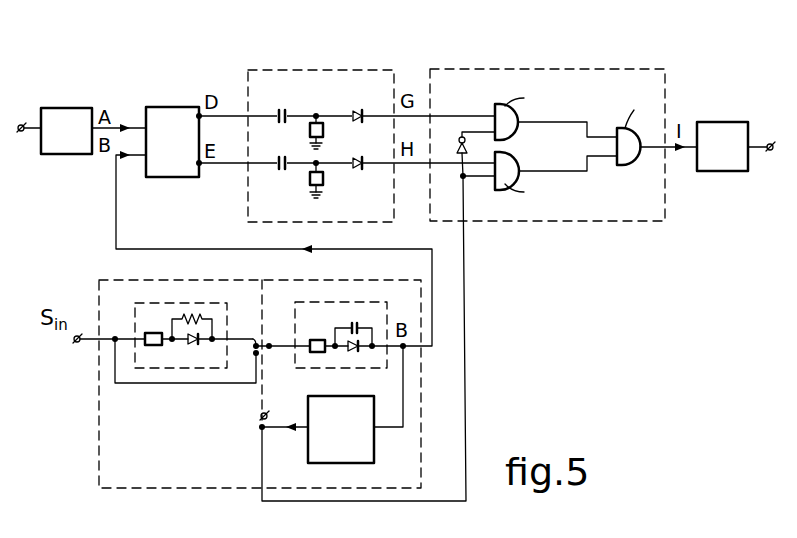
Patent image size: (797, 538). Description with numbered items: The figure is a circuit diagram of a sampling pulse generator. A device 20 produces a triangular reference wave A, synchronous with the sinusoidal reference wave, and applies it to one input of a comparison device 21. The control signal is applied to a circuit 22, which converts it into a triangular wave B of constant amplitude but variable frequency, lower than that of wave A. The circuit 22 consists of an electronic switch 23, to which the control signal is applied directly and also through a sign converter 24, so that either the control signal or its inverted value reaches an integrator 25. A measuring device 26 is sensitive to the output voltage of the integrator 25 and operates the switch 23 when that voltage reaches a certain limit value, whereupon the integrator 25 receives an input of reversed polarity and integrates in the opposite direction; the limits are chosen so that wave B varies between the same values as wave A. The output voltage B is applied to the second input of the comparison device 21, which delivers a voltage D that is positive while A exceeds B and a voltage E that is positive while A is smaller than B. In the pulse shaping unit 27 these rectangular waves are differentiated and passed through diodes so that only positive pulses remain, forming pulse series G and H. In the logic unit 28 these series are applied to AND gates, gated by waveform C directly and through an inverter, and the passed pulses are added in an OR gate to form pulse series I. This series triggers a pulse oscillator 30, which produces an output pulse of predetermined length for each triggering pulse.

The device 20 is at (67, 106).
The comparison device 21 is at (169, 106).
The circuit 22 is at (165, 490).
The electronic switch 23 is at (258, 343).
The sign converter 24 is at (210, 303).
The integrator 25 is at (320, 302).
The measuring device 26 is at (368, 444).
The pulse shaping unit 27 is at (300, 69).
The logic unit 28 is at (551, 67).
The pulse oscillator 30 is at (716, 133).